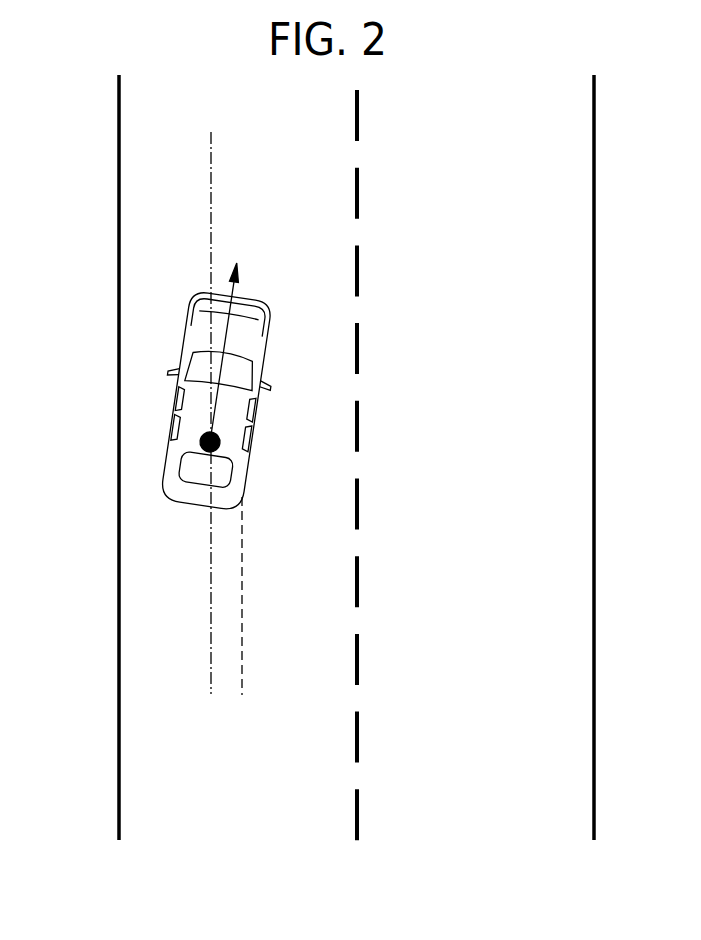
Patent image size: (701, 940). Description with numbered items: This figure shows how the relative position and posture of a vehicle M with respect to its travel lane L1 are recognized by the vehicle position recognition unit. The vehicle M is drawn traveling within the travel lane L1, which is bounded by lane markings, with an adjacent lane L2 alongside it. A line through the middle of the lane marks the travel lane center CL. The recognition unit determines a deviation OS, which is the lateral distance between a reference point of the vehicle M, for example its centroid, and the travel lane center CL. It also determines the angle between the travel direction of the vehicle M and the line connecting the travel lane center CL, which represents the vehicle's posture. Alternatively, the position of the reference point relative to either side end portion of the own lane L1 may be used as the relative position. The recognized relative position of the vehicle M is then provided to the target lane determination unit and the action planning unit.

The vehicle M is at (175, 418).
The travel lane center CL is at (241, 583).
The deviation OS is at (268, 683).
The travel lane L1 is at (234, 826).
The second lane L2 is at (479, 826).